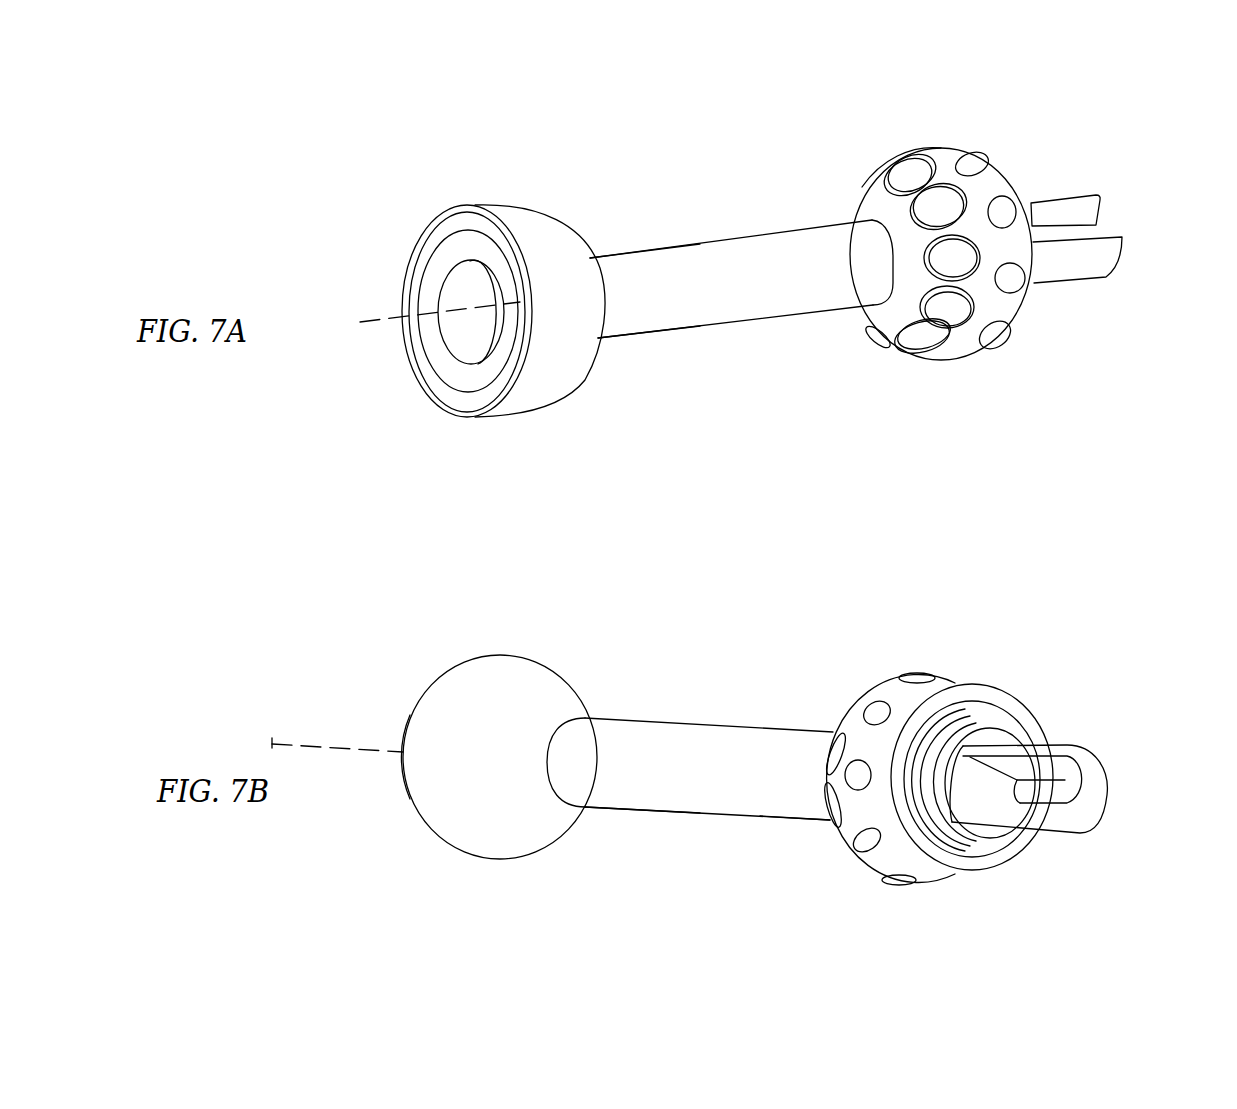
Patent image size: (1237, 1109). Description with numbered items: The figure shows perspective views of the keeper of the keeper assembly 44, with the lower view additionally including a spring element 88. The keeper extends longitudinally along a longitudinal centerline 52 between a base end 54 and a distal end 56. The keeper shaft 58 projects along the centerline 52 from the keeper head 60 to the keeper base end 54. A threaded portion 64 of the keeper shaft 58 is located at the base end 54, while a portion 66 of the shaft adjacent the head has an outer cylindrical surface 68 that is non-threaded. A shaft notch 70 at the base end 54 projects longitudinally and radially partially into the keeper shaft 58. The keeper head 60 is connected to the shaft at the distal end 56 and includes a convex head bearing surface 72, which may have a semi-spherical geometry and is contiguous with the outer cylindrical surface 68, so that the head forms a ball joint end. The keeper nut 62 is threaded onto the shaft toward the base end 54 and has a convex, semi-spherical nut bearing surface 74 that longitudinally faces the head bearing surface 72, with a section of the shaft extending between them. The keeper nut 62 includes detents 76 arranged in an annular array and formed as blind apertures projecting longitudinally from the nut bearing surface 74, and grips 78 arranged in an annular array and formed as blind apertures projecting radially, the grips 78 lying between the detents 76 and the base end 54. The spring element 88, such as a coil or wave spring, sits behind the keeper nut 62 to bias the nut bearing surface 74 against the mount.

In FIG. 7A, the keeper assembly 44 is at (1097, 114).
In FIG. 7B, the keeper assembly 44 is at (1116, 654).
In FIG. 7A, the longitudinal centerline 52 is at (364, 320).
In FIG. 7B, the longitudinal centerline 52 is at (273, 735).
In FIG. 7A, the base end 54 is at (1124, 255).
In FIG. 7B, the base end 54 is at (1097, 803).
In FIG. 7A, the distal end 56 is at (448, 400).
In FIG. 7B, the distal end 56 is at (403, 727).
In FIG. 7A, the keeper shaft 58 is at (723, 320).
In FIG. 7B, the keeper shaft 58 is at (736, 718).
In FIG. 7A, the keeper head 60 is at (515, 420).
In FIG. 7B, the keeper head 60 is at (573, 670).
In FIG. 7A, the keeper nut 62 is at (964, 360).
In FIG. 7B, the keeper nut 62 is at (954, 675).
In FIG. 7A, the threaded portion 64 is at (870, 314).
In FIG. 7B, the threaded portion 64 is at (818, 829).
In FIG. 7A, the non-threaded portion 66 is at (623, 349).
In FIG. 7B, the non-threaded portion 66 is at (607, 817).
In FIG. 7A, the outer cylindrical surface 68 is at (606, 255).
In FIG. 7B, the outer cylindrical surface 68 is at (610, 722).
In FIG. 7A, the shaft notch 70 is at (1102, 222).
In FIG. 7B, the shaft notch 70 is at (1098, 788).
In FIG. 7A, the head bearing surface 72 is at (550, 388).
In FIG. 7B, the head bearing surface 72 is at (493, 690).
In FIG. 7A, the nut bearing surface 74 is at (853, 207).
In FIG. 7B, the nut bearing surface 74 is at (893, 693).
In FIG. 7A, the detents 76 is at (940, 210).
In FIG. 7B, the detents 76 is at (826, 779).
In FIG. 7A, the grips 78 is at (1003, 212).
In FIG. 7B, the grips 78 is at (878, 713).
In FIG. 7B, the spring element 88 is at (1000, 873).